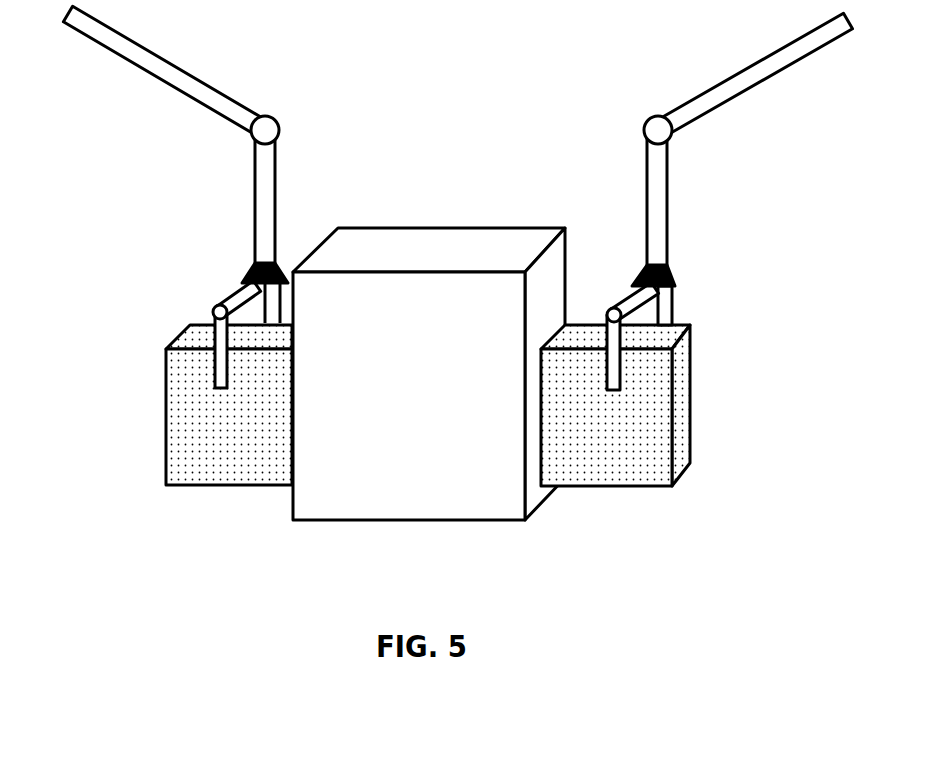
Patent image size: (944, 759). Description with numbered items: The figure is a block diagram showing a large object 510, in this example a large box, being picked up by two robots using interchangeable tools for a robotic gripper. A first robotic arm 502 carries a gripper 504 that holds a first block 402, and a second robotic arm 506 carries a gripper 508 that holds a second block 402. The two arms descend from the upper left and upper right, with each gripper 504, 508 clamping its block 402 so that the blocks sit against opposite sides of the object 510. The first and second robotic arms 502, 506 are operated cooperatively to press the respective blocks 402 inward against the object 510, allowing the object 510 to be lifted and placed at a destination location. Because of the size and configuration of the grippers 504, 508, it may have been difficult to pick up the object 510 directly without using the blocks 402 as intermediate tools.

The block 402 is at (163, 417).
The first robotic arm 502 is at (209, 82).
The gripper 504 is at (233, 287).
The second robotic arm 506 is at (707, 90).
The gripper 508 is at (675, 305).
The object 510 is at (425, 248).